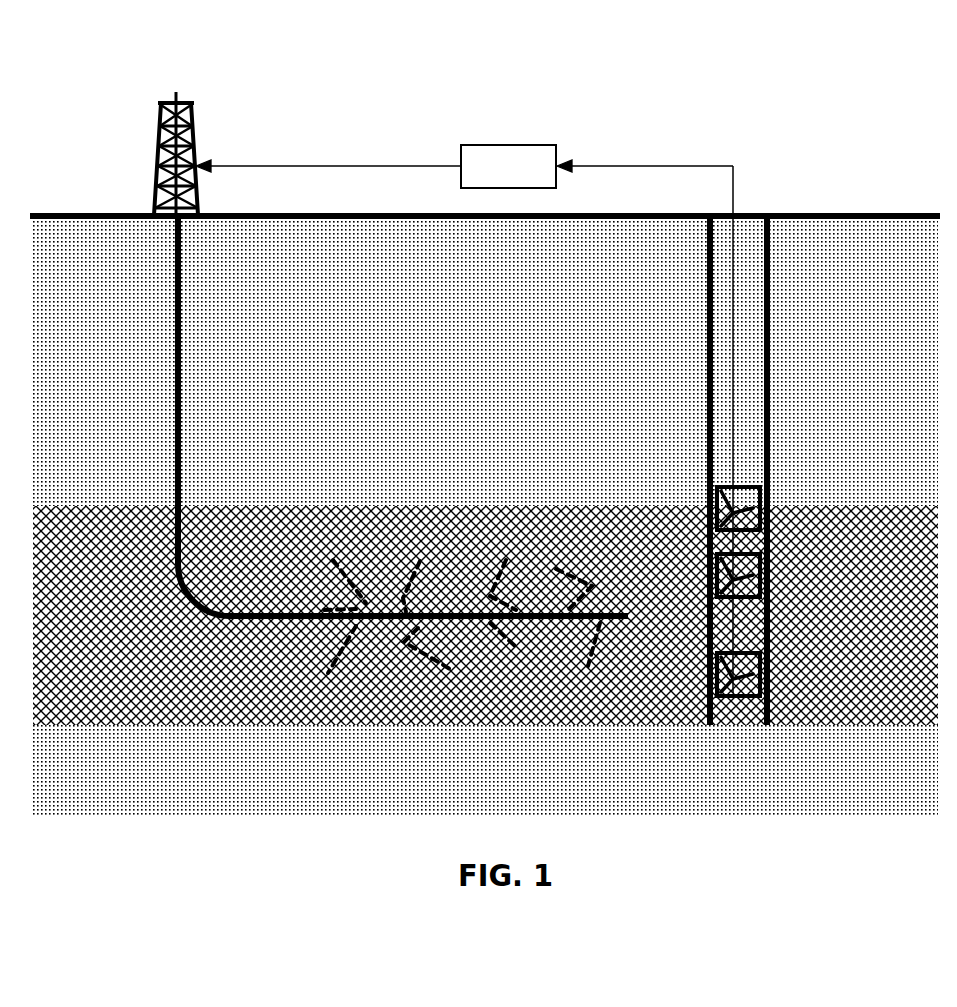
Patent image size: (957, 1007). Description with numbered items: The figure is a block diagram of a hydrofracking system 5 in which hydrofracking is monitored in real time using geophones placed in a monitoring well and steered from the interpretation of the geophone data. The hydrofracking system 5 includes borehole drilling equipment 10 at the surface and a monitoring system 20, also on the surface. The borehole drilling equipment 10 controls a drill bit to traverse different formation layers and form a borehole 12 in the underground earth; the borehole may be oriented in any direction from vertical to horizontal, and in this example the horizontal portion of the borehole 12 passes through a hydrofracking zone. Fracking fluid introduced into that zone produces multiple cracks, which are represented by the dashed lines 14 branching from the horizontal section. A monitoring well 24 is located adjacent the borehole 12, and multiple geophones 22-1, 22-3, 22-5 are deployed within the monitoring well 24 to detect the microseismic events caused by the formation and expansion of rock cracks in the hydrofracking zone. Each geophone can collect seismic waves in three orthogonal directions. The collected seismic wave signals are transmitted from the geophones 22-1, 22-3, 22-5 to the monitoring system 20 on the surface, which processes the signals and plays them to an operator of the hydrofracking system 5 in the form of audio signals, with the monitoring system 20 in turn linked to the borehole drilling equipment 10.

The hydrofracking system 5 is at (596, 40).
The borehole drilling equipment 10 is at (186, 122).
The borehole 12 is at (173, 430).
The dashed lines 14 is at (336, 560).
The monitoring system 20 is at (500, 158).
The geophone 22-1 is at (762, 476).
The geophone 22-3 is at (762, 545).
The geophone 22-5 is at (762, 635).
The monitoring well 24 is at (762, 340).